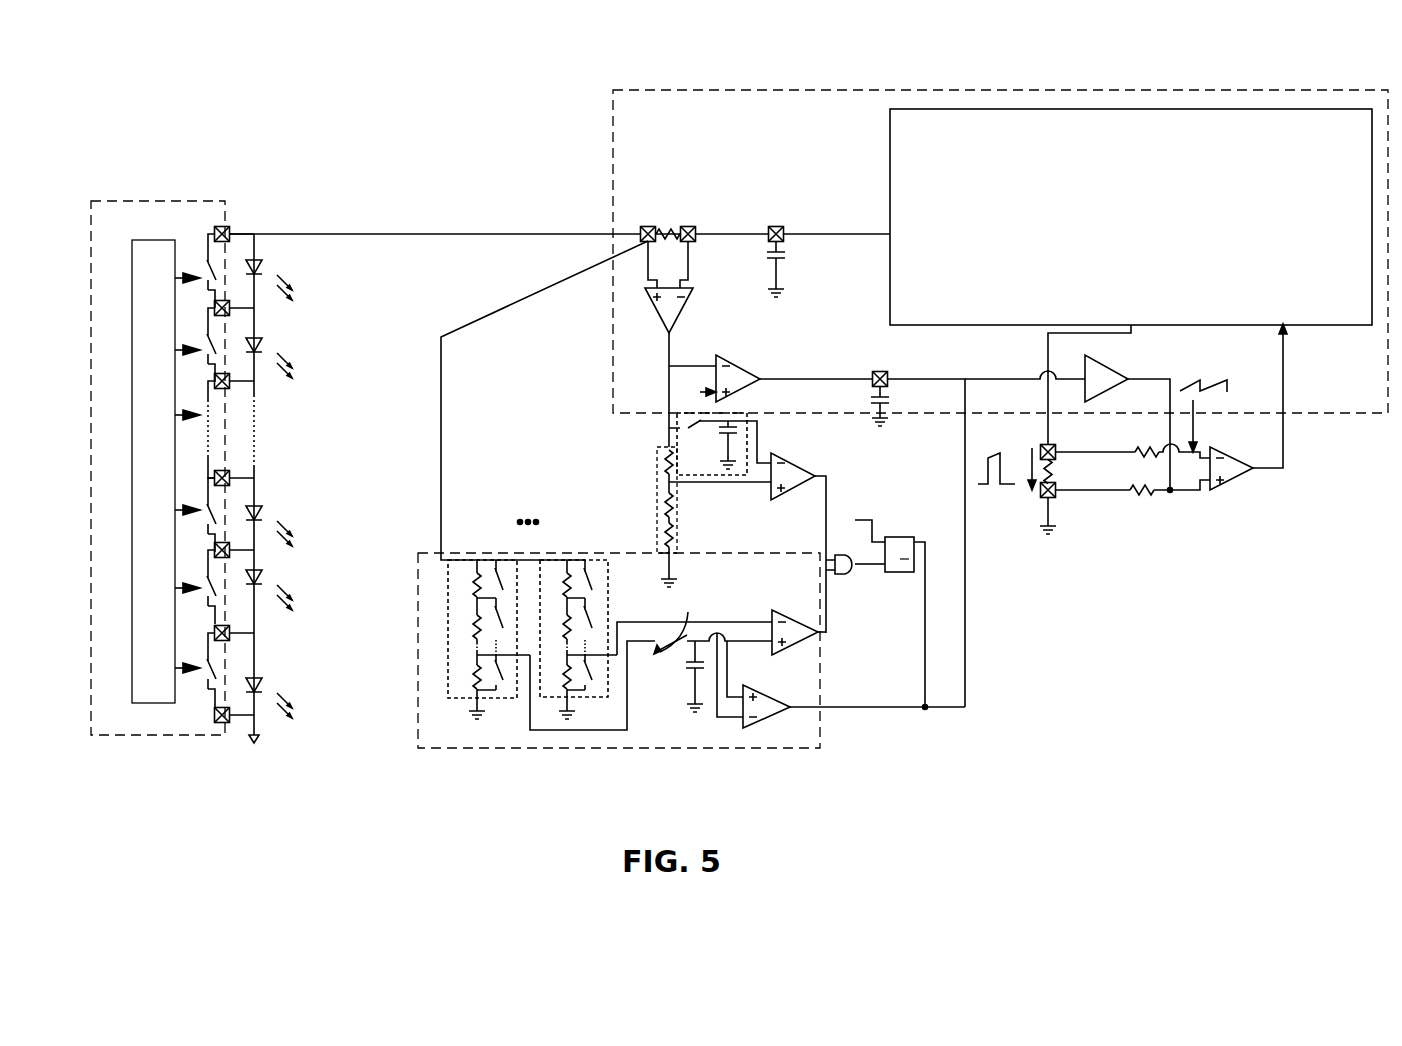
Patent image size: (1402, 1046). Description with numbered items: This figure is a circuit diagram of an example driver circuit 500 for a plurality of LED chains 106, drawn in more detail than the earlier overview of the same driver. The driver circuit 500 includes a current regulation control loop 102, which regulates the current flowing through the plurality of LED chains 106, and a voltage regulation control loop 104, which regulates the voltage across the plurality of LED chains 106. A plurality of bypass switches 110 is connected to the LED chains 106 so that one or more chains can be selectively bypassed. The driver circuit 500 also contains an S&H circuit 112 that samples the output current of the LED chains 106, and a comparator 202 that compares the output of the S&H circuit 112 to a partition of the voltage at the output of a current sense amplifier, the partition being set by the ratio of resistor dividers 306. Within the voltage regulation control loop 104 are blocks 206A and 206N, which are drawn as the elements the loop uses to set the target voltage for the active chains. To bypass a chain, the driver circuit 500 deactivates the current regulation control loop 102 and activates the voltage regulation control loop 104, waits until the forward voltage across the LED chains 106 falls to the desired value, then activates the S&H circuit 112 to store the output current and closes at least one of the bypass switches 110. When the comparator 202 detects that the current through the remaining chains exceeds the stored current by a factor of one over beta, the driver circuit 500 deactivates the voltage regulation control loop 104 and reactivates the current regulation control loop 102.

The driver circuit 500 is at (300, 73).
The bypass switches 110 is at (208, 200).
The LED chains 106 is at (272, 243).
The current regulation control loop 102 is at (866, 90).
The S&H circuit 112 is at (669, 430).
The resistor dividers 306 is at (659, 510).
The comparator 202 is at (793, 460).
The LED chain circuit 206A is at (510, 558).
The LED chain circuit 206N is at (578, 558).
The voltage regulation control loop 104 is at (767, 750).